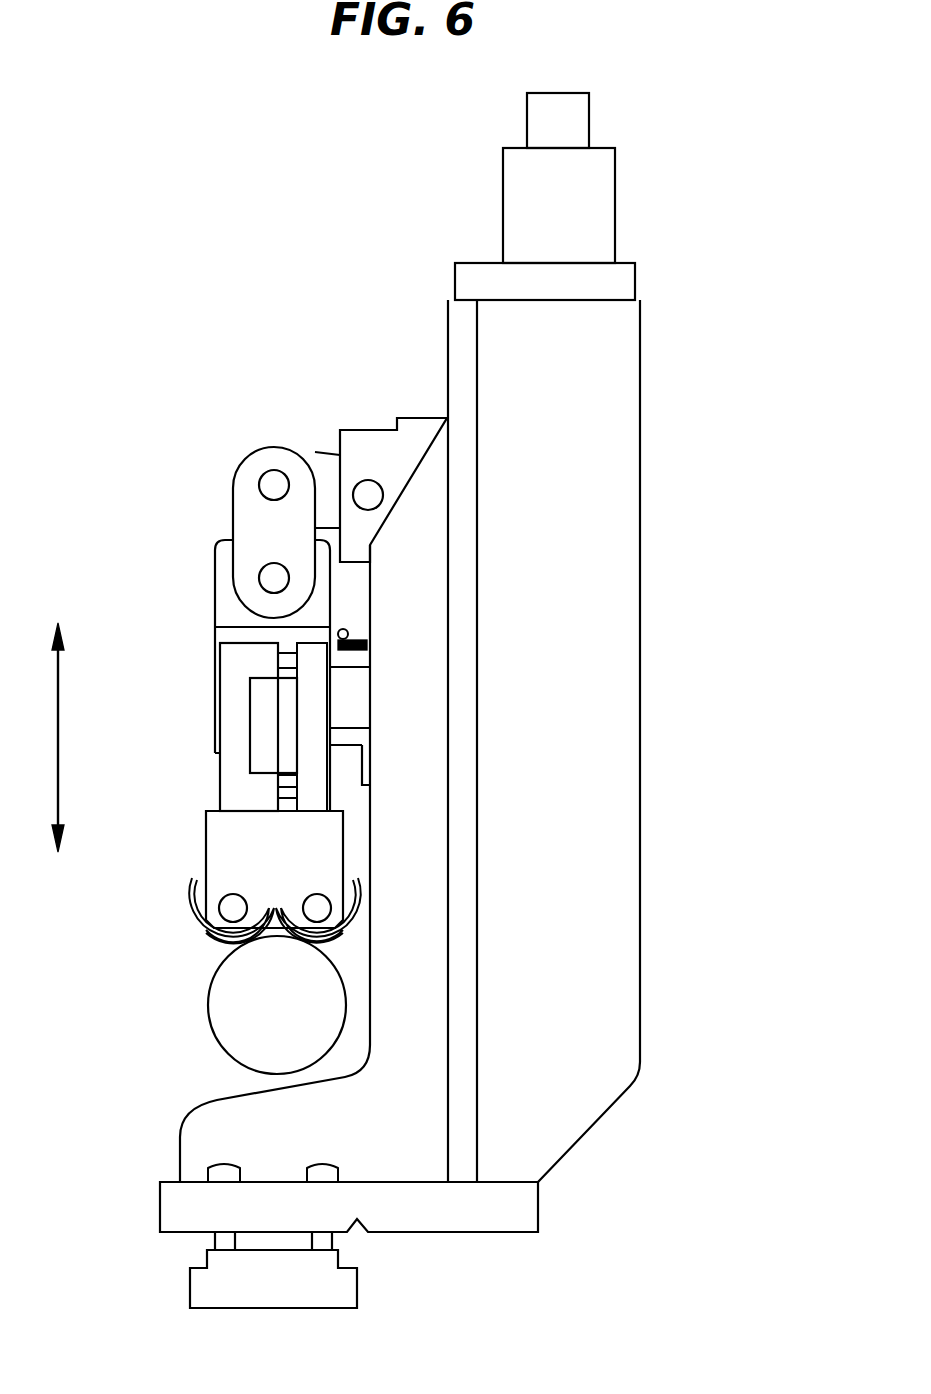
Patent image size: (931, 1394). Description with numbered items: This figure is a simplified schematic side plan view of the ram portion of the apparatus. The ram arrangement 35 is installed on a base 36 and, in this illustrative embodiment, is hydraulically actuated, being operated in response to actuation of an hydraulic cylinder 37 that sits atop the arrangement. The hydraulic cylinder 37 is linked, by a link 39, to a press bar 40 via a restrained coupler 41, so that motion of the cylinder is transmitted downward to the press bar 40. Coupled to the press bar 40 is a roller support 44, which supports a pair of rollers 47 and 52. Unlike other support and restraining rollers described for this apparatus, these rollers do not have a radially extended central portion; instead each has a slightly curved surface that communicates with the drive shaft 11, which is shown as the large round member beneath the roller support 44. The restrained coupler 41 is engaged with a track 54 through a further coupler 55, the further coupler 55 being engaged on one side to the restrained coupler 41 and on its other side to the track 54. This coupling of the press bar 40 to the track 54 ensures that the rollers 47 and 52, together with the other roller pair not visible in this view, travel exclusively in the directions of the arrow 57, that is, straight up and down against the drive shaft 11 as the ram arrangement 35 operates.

The drive shaft 11 is at (228, 1028).
The ram arrangement 35 is at (488, 248).
The base 36 is at (350, 1290).
The hydraulic cylinder 37 is at (540, 117).
The link 39 is at (250, 510).
The press bar 40 is at (220, 573).
The restrained coupler 41 is at (228, 697).
The roller support 44 is at (233, 840).
The roller 47 is at (217, 933).
The roller 52 is at (348, 907).
The track 54 is at (437, 720).
The further coupler 55 is at (365, 690).
The arrow 57 is at (58, 712).